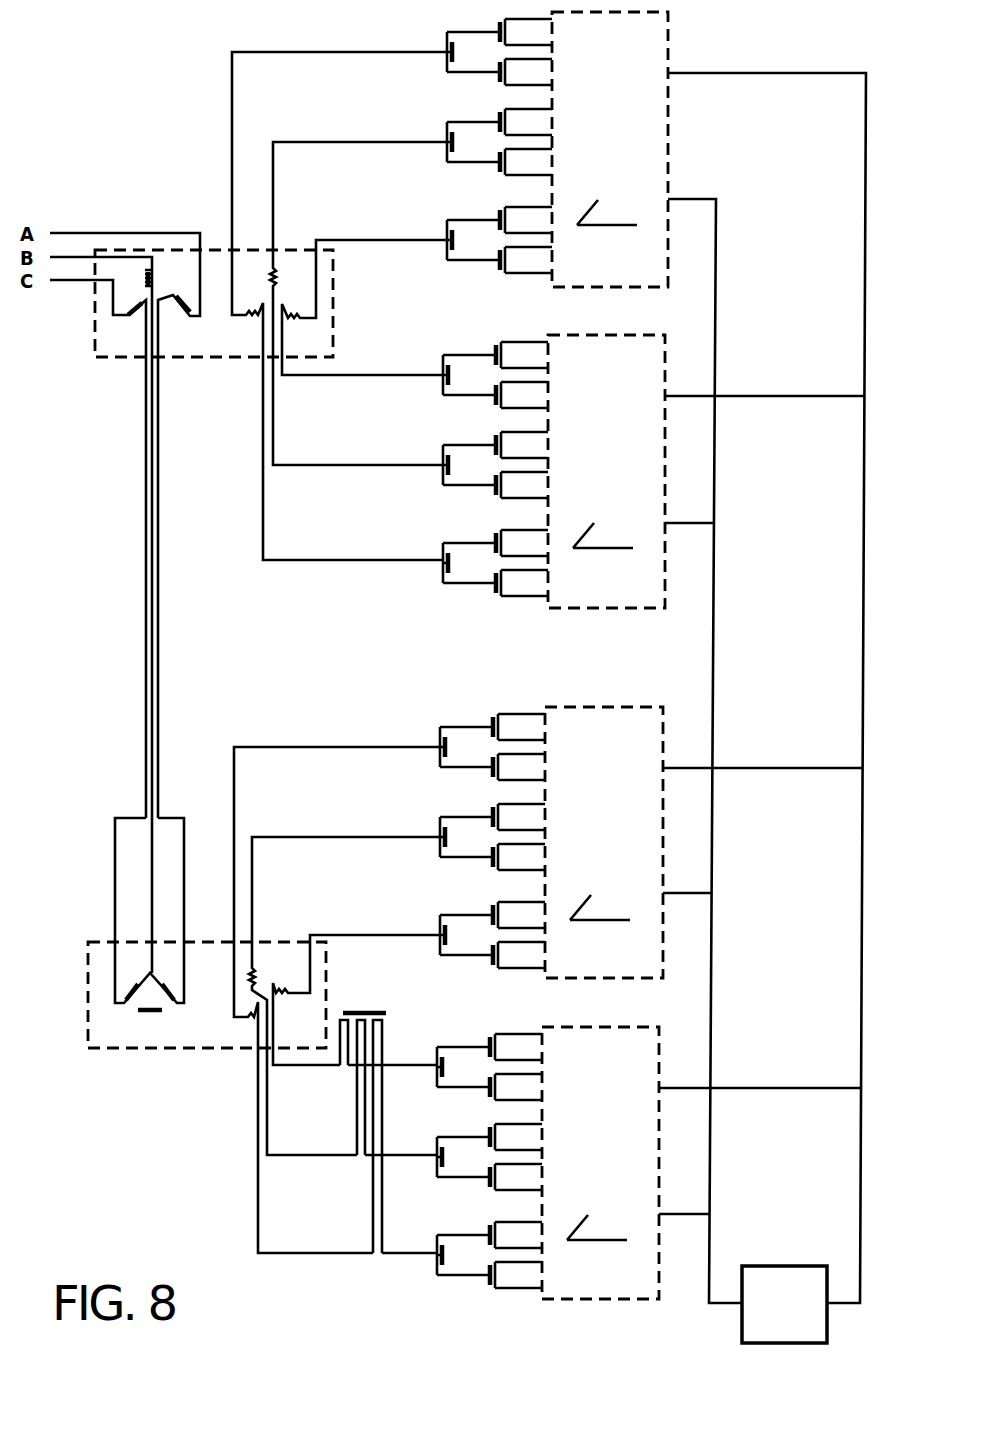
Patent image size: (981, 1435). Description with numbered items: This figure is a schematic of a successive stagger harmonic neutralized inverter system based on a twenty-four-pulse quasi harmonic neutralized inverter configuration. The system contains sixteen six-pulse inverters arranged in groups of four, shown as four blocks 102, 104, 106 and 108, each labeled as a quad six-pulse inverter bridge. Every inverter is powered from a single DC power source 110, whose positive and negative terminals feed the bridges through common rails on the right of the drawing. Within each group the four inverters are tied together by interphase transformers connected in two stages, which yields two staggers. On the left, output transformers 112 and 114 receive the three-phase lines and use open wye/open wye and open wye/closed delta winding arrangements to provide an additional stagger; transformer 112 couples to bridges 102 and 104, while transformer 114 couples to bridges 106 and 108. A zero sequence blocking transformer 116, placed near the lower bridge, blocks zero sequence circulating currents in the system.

The block of four six-pulse inverters 102 is at (671, 50).
The block of four six-pulse inverters 104 is at (580, 610).
The block of four six-pulse inverters 106 is at (630, 698).
The block of four six-pulse inverters 108 is at (624, 1303).
The DC power source 110 is at (818, 1264).
The output transformer 112 is at (128, 357).
The output transformer 114 is at (120, 1048).
The zero sequence blocking transformer 116 is at (390, 1022).